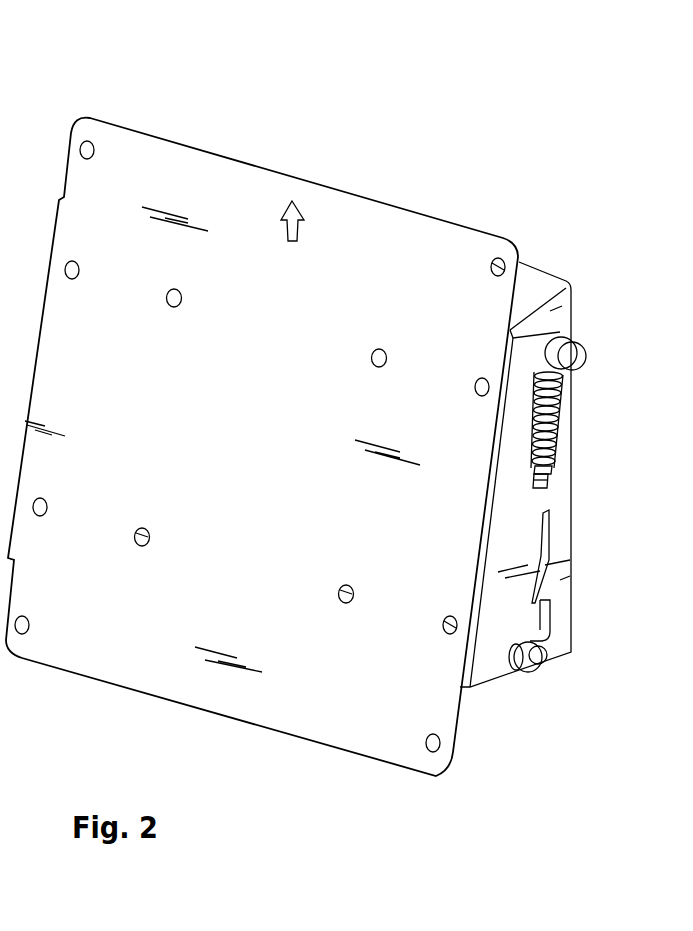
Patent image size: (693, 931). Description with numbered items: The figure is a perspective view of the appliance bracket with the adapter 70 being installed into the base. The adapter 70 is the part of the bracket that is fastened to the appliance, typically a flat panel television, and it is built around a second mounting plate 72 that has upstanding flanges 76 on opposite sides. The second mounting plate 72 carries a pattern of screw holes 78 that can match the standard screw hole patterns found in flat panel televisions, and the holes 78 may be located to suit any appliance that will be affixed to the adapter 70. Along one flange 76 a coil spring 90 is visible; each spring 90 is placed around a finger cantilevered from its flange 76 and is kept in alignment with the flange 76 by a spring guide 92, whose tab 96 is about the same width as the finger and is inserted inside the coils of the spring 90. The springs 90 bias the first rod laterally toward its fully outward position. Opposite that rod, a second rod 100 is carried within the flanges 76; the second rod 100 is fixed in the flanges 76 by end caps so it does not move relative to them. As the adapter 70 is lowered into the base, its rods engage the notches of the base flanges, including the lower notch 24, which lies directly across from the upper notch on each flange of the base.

The adapter 70 is at (458, 214).
The second mounting plate 72 is at (185, 176).
The screw holes 78 is at (182, 295).
The upstanding flanges 76 is at (525, 546).
The lower notch 24 is at (545, 617).
The second rod 100 is at (500, 672).
The coil spring 90 is at (558, 422).
The spring guide 92 is at (553, 480).
The tab 96 is at (549, 483).